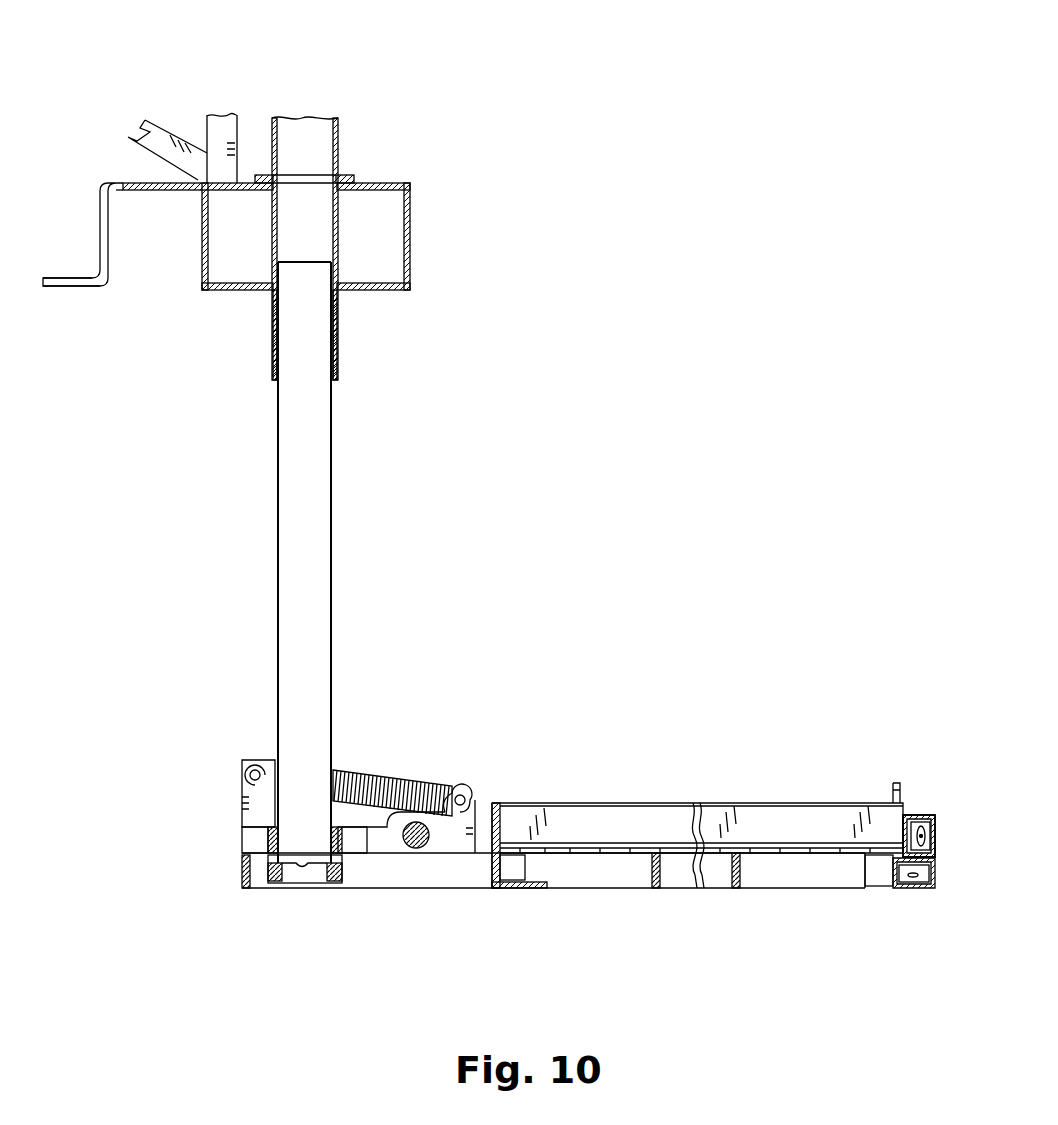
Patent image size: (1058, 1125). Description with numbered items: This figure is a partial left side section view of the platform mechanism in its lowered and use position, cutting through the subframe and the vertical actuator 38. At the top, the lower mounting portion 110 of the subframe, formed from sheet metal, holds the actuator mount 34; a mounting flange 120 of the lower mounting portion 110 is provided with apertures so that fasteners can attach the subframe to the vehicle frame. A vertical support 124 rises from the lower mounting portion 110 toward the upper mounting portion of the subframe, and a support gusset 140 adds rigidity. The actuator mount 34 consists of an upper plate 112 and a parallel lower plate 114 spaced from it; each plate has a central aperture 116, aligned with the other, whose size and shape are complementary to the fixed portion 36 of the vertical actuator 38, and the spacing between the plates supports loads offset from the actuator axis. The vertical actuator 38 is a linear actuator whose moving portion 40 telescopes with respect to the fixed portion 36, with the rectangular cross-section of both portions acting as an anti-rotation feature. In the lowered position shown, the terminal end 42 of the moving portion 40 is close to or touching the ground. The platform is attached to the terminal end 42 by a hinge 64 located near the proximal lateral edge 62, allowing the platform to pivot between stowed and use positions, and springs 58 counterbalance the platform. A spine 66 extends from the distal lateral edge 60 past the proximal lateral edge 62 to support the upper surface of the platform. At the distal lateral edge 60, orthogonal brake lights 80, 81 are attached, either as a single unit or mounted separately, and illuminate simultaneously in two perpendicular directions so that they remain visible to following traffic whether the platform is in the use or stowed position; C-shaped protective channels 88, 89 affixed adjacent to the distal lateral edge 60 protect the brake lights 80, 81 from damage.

The actuator mount 34 is at (412, 226).
The fixed portion 36 is at (340, 146).
The vertical actuator 38 is at (347, 115).
The moving portion 40 is at (277, 530).
The terminal end 42 is at (302, 882).
The springs 58 is at (386, 776).
The distal lateral edge 60 is at (880, 871).
The proximal lateral edge 62 is at (516, 864).
The hinge 64 is at (416, 849).
The spine 66 is at (358, 898).
The orthogonal brake light 80 is at (929, 835).
The orthogonal brake light 81 is at (910, 886).
The C-shaped protective channel 88 is at (915, 812).
The C-shaped protective channel 89 is at (940, 880).
The lower mounting portion 110 is at (101, 235).
The upper plate 112 is at (356, 180).
The lower plate 114 is at (412, 290).
The central aperture 116 is at (295, 293).
The mounting flange 120 is at (80, 288).
The vertical support 124 is at (225, 116).
The support gusset 140 is at (156, 118).